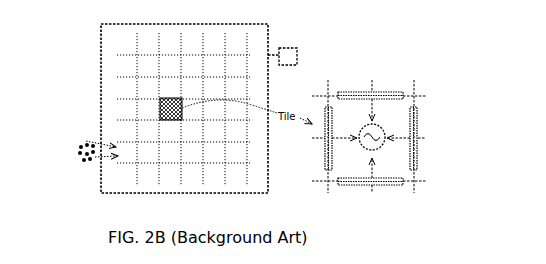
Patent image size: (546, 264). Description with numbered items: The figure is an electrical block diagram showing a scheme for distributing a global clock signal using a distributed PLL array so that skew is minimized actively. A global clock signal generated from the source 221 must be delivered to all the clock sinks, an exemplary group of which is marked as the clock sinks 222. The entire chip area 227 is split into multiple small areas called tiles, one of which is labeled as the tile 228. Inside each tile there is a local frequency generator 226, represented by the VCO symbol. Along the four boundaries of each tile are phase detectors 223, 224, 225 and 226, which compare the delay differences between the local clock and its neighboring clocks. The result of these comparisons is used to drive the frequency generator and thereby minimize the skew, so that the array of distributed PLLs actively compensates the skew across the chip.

The global clock source 221 is at (285, 46).
The group of clock sinks 222 is at (87, 168).
The phase detector 223 is at (445, 129).
The phase detector 224 is at (387, 88).
The phase detector 225 is at (386, 191).
The local frequency generator 226 is at (381, 126).
The chip area 227 is at (120, 47).
The tile 228 is at (170, 97).